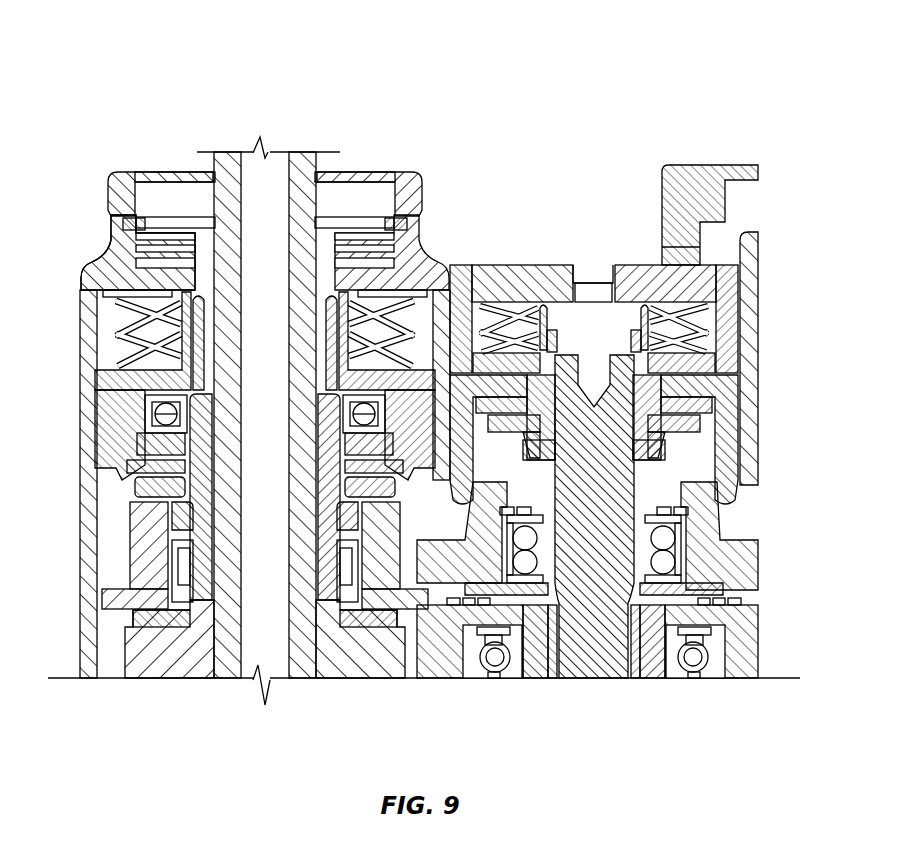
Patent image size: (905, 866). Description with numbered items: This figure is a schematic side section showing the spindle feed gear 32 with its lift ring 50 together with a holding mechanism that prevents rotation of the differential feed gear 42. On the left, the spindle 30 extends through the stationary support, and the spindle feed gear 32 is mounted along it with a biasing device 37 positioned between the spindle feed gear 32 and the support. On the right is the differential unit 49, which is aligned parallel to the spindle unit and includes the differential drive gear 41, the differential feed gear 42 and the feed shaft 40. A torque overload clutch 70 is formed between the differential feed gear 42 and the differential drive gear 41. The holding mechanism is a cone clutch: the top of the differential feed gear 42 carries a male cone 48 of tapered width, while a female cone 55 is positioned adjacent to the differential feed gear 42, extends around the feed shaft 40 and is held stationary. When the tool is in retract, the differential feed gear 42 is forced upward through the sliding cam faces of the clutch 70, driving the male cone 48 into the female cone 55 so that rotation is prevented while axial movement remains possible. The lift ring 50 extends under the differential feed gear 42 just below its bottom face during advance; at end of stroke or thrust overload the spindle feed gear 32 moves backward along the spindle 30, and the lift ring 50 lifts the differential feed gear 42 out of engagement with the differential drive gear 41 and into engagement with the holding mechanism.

The spindle 30 is at (257, 317).
The biasing device 37 is at (100, 312).
The spindle feed gear 32 is at (148, 560).
The lift ring 50 is at (345, 602).
The differential unit 49 is at (632, 368).
The feed shaft 40 is at (587, 457).
The female cone 55 is at (722, 458).
The male cone 48 is at (748, 480).
The differential feed gear 42 is at (748, 566).
The torque overload clutch 70 is at (752, 600).
The differential drive gear 41 is at (745, 662).